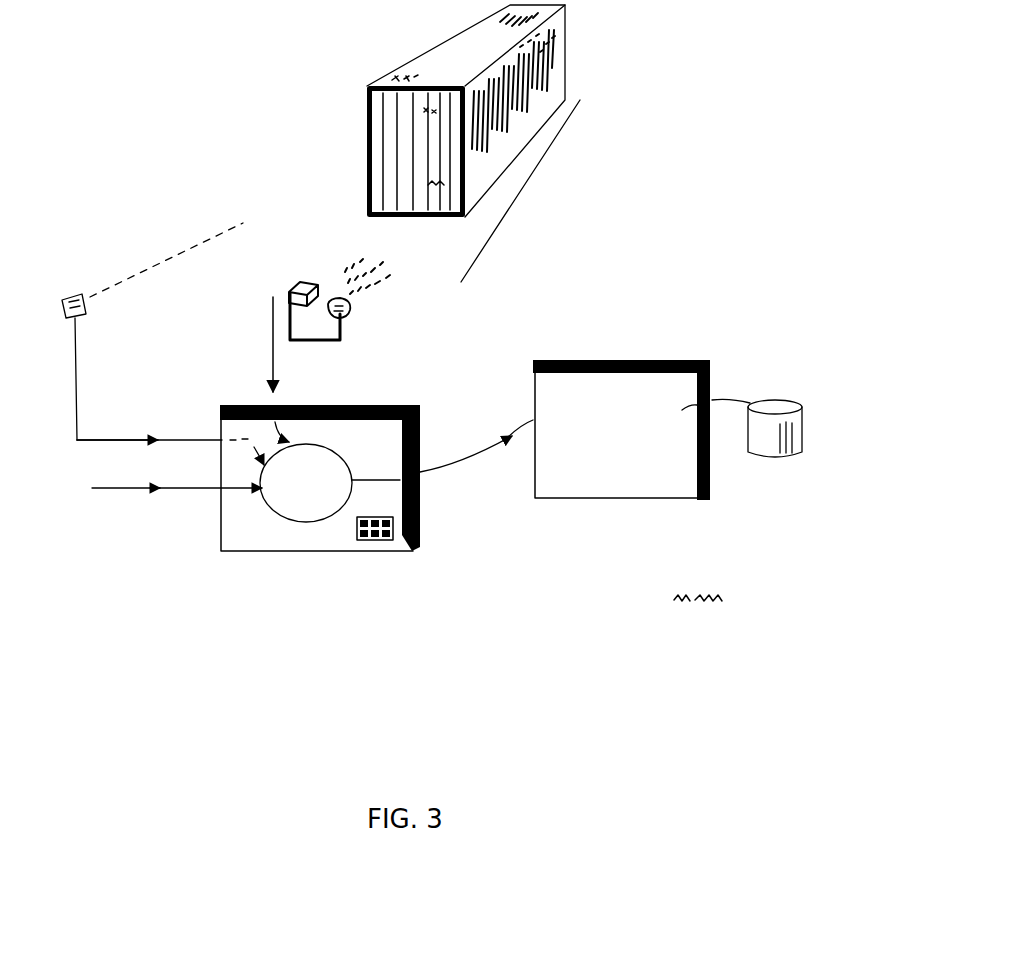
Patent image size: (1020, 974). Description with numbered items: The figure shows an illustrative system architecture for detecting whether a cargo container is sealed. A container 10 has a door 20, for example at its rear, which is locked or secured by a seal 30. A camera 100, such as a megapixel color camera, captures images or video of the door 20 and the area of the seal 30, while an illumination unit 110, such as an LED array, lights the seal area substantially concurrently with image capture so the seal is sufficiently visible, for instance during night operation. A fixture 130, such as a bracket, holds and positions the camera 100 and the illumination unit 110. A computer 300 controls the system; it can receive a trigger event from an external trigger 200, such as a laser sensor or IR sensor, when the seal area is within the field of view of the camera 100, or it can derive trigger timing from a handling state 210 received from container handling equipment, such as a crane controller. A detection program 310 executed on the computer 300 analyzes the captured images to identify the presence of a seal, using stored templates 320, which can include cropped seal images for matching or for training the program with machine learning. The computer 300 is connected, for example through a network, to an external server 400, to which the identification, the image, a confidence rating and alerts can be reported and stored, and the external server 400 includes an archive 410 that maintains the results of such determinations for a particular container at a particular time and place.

The container 10 is at (546, 70).
The door 20 is at (362, 128).
The seal 30 is at (464, 186).
The camera 100 is at (270, 308).
The illumination unit 110 is at (360, 314).
The fixture 130 is at (284, 338).
The trigger 200 is at (56, 308).
The handling state 210 is at (153, 515).
The computer 300 is at (214, 550).
The detection program 310 is at (350, 613).
The templates 320 is at (380, 545).
The external server 400 is at (565, 460).
The archive 410 is at (775, 458).